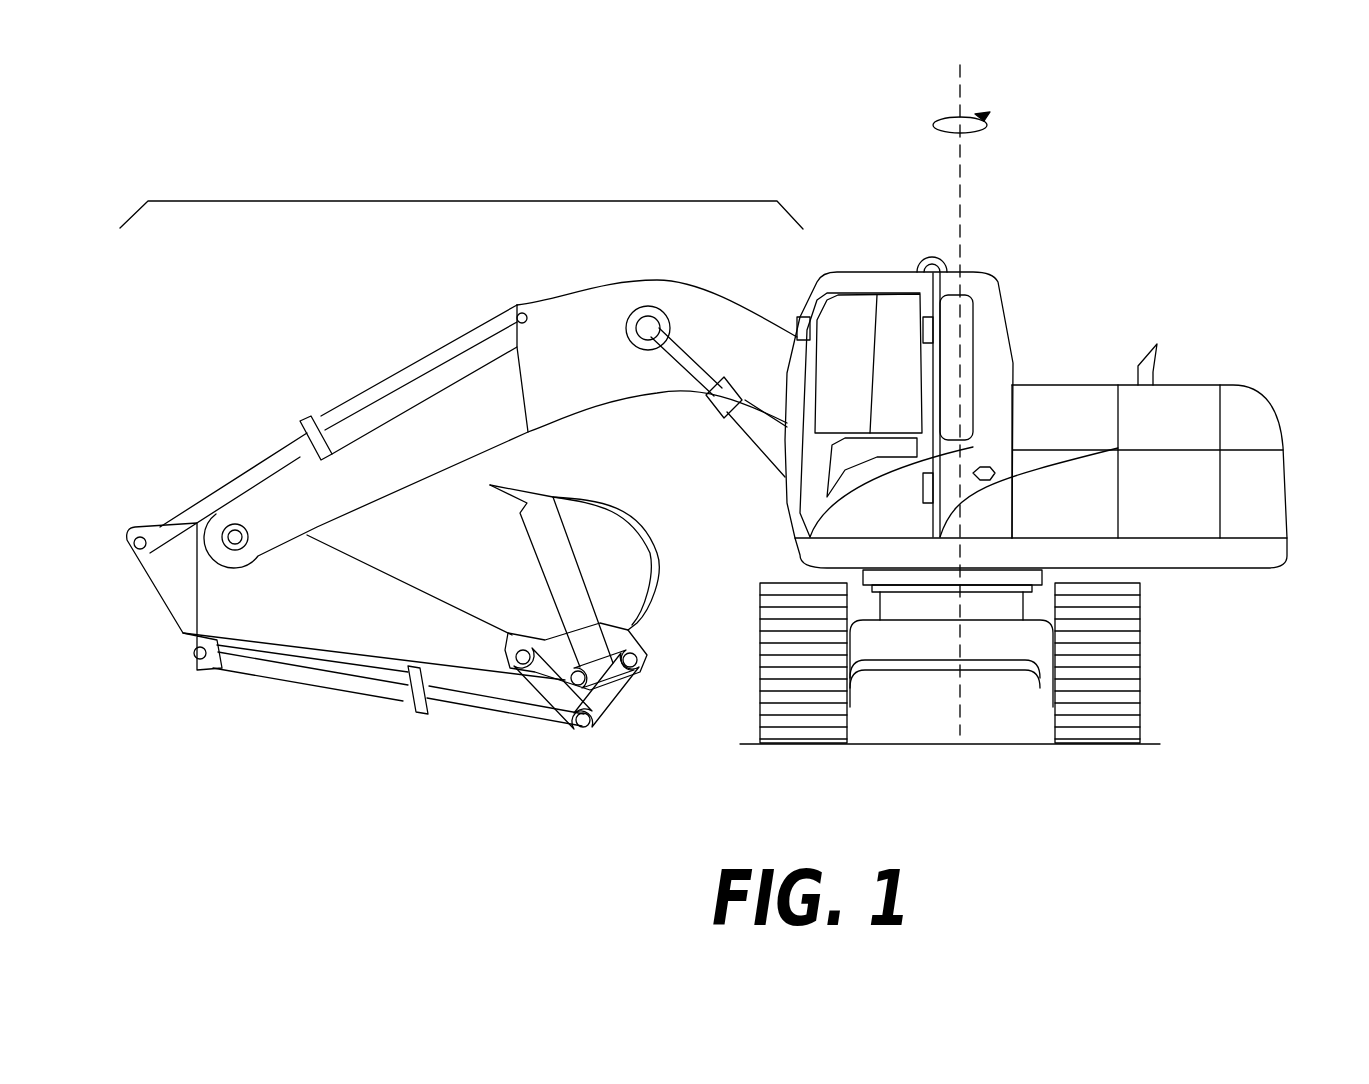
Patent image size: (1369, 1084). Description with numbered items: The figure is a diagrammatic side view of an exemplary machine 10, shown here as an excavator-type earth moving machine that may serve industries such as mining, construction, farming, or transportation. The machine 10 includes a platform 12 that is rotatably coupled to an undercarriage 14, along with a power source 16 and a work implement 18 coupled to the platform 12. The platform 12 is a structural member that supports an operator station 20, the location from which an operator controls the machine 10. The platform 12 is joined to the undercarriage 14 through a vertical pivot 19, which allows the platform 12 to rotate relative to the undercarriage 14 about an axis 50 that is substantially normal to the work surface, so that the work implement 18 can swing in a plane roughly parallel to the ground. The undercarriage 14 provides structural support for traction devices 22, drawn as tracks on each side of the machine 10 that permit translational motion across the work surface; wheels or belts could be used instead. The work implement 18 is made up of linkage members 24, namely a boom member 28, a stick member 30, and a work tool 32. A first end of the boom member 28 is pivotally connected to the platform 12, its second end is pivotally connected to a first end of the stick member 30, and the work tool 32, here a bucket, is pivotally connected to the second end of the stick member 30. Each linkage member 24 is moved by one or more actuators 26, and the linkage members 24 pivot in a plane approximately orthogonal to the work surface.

The machine 10 is at (1128, 285).
The platform 12 is at (1290, 550).
The undercarriage 14 is at (915, 650).
The power source 16 is at (1190, 436).
The work implement 18 is at (456, 201).
The vertical pivot 19 is at (1038, 590).
The operator station 20 is at (858, 270).
The traction devices 22 is at (1125, 668).
The linkage members 24 is at (127, 654).
The actuators 26 is at (397, 386).
The boom member 28 is at (608, 378).
The stick member 30 is at (336, 624).
The work tool 32 is at (641, 568).
The axis 50 is at (962, 199).